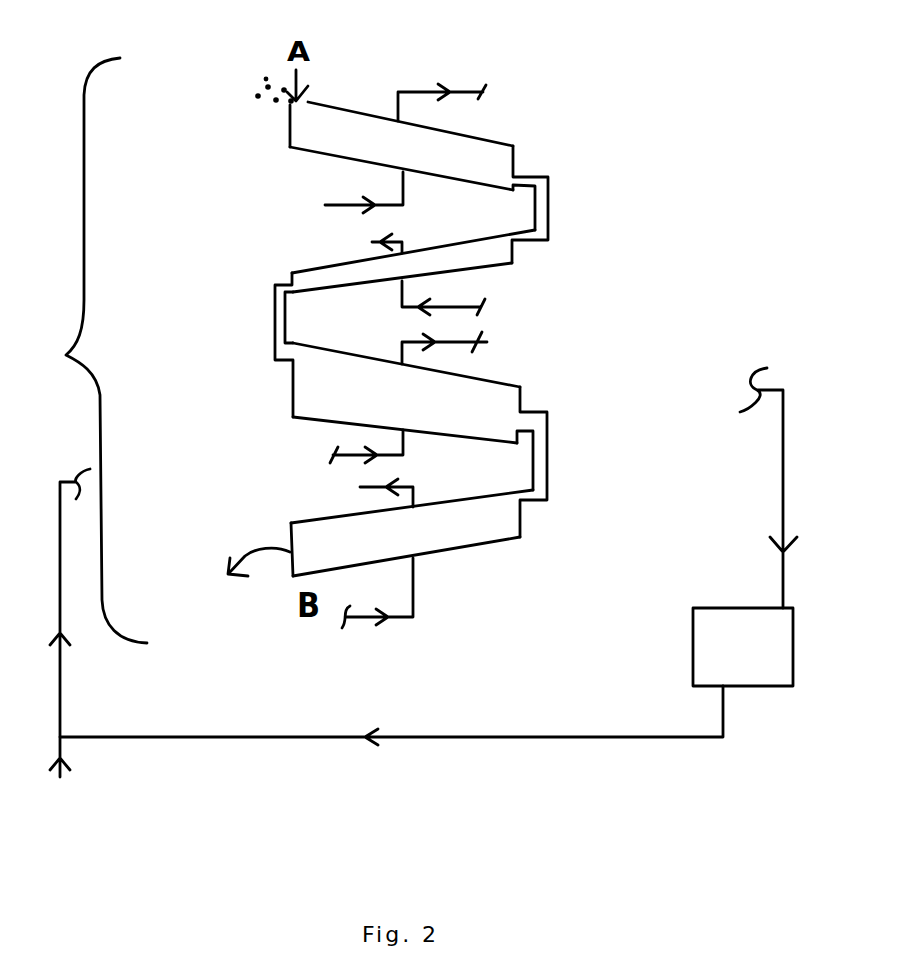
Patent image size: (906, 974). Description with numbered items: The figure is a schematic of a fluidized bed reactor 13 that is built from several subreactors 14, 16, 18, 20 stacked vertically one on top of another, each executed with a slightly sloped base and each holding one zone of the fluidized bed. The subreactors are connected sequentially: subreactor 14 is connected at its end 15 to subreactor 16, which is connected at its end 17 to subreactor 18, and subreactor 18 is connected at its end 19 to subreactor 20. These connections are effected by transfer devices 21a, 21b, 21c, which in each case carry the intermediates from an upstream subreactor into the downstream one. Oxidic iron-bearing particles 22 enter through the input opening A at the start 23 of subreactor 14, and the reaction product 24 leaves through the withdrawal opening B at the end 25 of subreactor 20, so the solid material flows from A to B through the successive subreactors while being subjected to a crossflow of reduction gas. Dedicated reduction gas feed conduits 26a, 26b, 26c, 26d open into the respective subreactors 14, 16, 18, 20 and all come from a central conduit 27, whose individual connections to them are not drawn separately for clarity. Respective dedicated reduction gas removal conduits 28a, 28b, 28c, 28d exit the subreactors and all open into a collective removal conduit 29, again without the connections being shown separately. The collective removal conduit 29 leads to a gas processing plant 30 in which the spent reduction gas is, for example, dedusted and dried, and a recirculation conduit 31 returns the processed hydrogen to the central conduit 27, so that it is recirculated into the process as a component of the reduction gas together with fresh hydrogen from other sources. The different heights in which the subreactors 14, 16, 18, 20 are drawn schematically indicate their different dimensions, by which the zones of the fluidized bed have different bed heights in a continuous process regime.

The fluidized bed reactor 13 is at (84, 350).
The subreactor 14 is at (462, 147).
The end of subreactor 15 is at (517, 150).
The subreactor 16 is at (511, 262).
The end of subreactor 17 is at (272, 284).
The subreactor 18 is at (491, 388).
The end of subreactor 19 is at (523, 393).
The subreactor 20 is at (500, 527).
The transfer device 21a is at (549, 185).
The transfer device 21b is at (270, 323).
The transfer device 21c is at (550, 450).
The oxidic iron-bearing particles 22 is at (255, 88).
The start of subreactor 23 is at (289, 131).
The reaction product 24 is at (254, 549).
The end of subreactor 25 is at (287, 567).
The reduction gas feed conduit 26a is at (331, 205).
The reduction gas feed conduit 26b is at (401, 307).
The reduction gas feed conduit 26c is at (405, 448).
The reduction gas feed conduit 26d is at (415, 617).
The central conduit 27 is at (60, 688).
The reduction gas removal conduit 28a is at (428, 92).
The reduction gas removal conduit 28b is at (370, 242).
The reduction gas removal conduit 28c is at (483, 340).
The reduction gas removal conduit 28d is at (362, 487).
The collective removal conduit 29 is at (778, 501).
The gas processing plant 30 is at (693, 631).
The recirculation conduit 31 is at (440, 736).